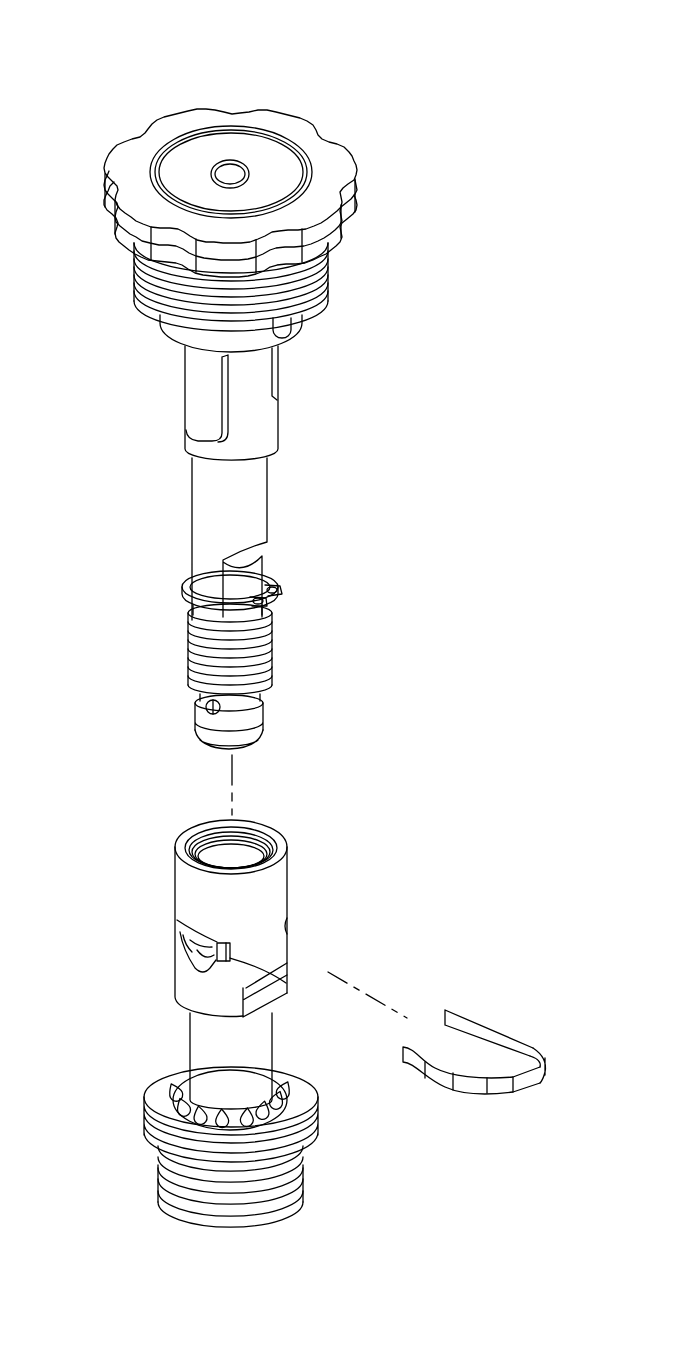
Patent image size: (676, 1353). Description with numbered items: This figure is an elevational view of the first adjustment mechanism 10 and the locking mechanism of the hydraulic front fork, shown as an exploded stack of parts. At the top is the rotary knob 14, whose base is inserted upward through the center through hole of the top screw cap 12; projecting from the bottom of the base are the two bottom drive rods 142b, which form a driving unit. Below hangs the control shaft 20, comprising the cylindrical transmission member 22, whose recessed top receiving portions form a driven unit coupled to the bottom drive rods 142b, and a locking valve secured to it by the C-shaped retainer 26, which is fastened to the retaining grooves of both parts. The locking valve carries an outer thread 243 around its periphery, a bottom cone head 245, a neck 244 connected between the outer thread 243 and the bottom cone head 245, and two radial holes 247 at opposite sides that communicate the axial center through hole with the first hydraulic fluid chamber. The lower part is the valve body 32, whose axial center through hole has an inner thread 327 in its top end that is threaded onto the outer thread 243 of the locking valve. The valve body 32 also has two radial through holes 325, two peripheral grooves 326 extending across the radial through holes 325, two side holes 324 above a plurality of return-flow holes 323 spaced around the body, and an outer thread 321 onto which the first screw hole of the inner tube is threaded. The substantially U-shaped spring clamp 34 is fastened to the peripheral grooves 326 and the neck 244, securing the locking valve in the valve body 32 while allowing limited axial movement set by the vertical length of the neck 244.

The first adjustment mechanism 10 is at (170, 103).
The rotary knob 14 is at (314, 117).
The top screw cap 12 is at (340, 268).
The control shaft 20 is at (278, 471).
The bottom drive rods 142b is at (190, 383).
The cylindrical transmission member 22 is at (205, 508).
The C-shaped retainer 26 is at (277, 577).
The outer thread 243 is at (188, 655).
The neck 244 is at (243, 708).
The radial holes 247 is at (212, 705).
The bottom cone head 245 is at (253, 742).
The valve body 32 is at (296, 886).
The inner thread 327 is at (210, 850).
The radial through holes 325 is at (195, 965).
The peripheral grooves 326 is at (229, 956).
The side holes 324 is at (208, 1075).
The return-flow holes 323 is at (203, 1112).
The outer thread 321 is at (290, 1187).
The U-shaped spring clamp 34 is at (503, 1032).